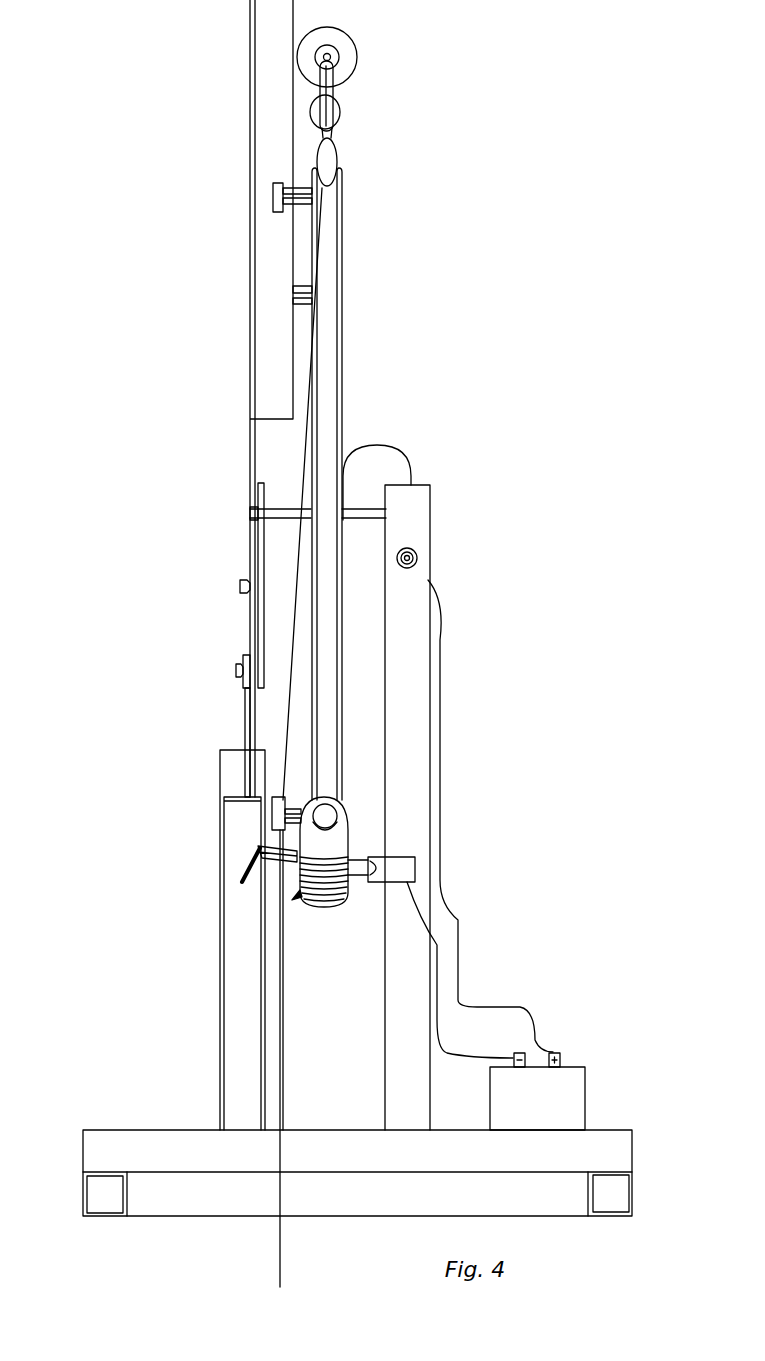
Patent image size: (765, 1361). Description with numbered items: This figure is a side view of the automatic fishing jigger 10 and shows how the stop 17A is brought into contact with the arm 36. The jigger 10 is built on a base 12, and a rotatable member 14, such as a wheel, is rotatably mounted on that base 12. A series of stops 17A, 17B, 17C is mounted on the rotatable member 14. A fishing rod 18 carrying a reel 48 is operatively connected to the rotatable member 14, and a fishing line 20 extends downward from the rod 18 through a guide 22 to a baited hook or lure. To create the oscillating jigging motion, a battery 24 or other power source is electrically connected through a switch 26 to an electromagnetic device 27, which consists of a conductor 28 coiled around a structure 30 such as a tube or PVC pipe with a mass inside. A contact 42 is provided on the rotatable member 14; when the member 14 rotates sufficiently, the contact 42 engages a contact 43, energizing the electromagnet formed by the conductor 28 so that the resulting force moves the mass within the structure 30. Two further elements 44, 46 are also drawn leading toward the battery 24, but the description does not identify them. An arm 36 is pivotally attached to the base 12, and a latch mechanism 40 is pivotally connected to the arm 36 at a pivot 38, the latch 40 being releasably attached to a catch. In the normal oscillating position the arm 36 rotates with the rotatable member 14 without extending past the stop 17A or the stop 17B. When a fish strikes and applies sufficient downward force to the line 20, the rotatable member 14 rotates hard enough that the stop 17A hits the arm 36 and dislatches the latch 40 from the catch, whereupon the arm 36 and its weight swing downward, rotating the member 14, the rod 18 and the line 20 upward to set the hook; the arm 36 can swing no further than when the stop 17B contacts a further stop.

The fishing jigger 10 is at (467, 58).
The base 12 is at (103, 1130).
The rotatable member 14 is at (342, 233).
The stop 17A is at (278, 212).
The stop 17B is at (298, 304).
The stop 17C is at (275, 800).
The fishing rod 18 is at (340, 88).
The fishing line 20 is at (280, 1258).
The guide 22 is at (243, 870).
The battery 24 is at (585, 1081).
The switch 26 is at (418, 554).
The electromagnetic device 27 is at (296, 898).
The conductor 28 is at (328, 904).
The structure 30 is at (328, 815).
The arm 36 is at (250, 66).
The pivot 38 is at (242, 667).
The latch mechanism 40 is at (243, 737).
The contact 42 is at (362, 860).
The contact 43 is at (402, 878).
The negative cable 44 is at (445, 1058).
The positive cable 46 is at (452, 895).
The reel 48 is at (354, 39).